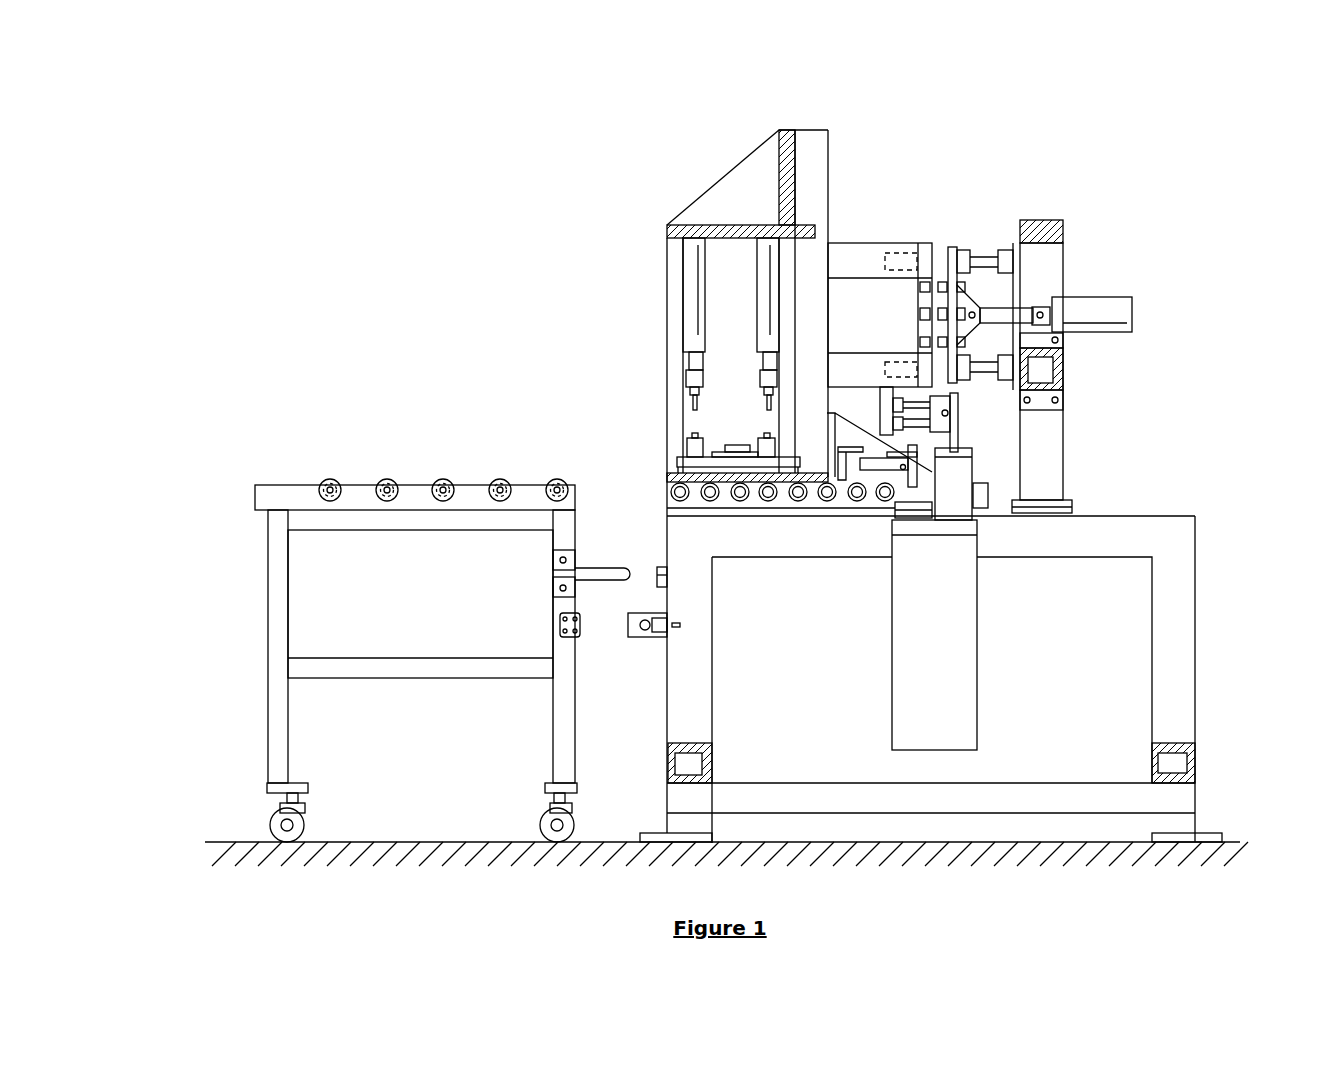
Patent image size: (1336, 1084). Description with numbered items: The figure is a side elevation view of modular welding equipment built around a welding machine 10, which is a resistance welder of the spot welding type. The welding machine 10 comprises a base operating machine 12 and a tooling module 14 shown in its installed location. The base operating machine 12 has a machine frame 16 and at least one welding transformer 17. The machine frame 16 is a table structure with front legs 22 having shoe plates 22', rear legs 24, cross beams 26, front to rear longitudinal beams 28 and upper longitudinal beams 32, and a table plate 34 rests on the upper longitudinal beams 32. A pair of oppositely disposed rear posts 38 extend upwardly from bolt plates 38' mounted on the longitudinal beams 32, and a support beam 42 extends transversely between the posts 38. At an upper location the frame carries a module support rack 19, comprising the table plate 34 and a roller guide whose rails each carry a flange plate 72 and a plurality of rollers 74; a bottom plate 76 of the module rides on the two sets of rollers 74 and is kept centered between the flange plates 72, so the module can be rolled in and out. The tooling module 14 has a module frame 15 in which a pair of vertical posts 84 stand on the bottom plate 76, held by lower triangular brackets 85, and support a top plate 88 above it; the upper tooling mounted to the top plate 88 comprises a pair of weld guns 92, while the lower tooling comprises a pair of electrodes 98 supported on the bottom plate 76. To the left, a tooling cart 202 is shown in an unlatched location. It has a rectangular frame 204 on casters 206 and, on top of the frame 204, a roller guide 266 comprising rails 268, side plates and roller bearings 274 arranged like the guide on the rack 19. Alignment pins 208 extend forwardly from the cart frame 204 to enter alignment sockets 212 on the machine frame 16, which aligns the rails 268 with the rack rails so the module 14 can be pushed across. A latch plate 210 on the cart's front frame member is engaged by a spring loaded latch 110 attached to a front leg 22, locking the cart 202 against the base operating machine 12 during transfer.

The welding machine 10 is at (992, 158).
The base operating machine 12 is at (1132, 453).
The tooling module 14 is at (623, 214).
The module frame 15 is at (794, 298).
The machine frame 16 is at (1199, 572).
The welding transformer 17 is at (962, 655).
The module support rack 19 is at (735, 528).
The front legs 22 is at (738, 670).
The shoe plates 22' is at (952, 799).
The rear legs 24 is at (1173, 633).
The cross beams 26 is at (703, 748).
The front to rear longitudinal beams 28 is at (840, 798).
The upper longitudinal beams 32 is at (1108, 540).
The table plate 34 is at (797, 516).
The rear posts 38 is at (1074, 371).
The bolt plates 38' is at (1064, 491).
The support beam 42 is at (1058, 235).
The flange plate 72 is at (753, 503).
The rollers 74 is at (822, 503).
The bottom plate 76 is at (677, 462).
The vertical posts 84 is at (817, 178).
The lower triangular brackets 85 is at (848, 445).
The top plate 88 is at (713, 225).
The weld guns 92 is at (751, 353).
The electrodes 98 is at (750, 438).
The latch 110 is at (645, 646).
The tooling cart 202 is at (417, 599).
The rectangular frame 204 is at (277, 633).
The casters 206 is at (545, 818).
The alignment pins 208 is at (600, 568).
The latch plate 210 is at (556, 623).
The alignment sockets 212 is at (662, 567).
The roller guide 266 is at (311, 471).
The rails 268 is at (280, 500).
The roller bearings 274 is at (387, 479).